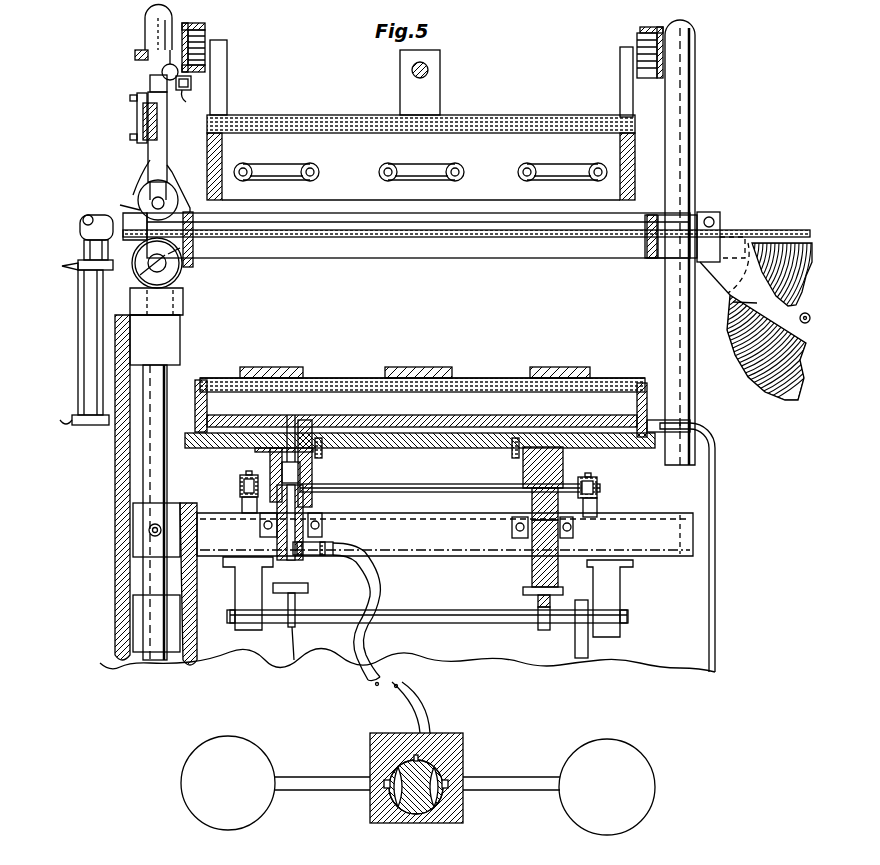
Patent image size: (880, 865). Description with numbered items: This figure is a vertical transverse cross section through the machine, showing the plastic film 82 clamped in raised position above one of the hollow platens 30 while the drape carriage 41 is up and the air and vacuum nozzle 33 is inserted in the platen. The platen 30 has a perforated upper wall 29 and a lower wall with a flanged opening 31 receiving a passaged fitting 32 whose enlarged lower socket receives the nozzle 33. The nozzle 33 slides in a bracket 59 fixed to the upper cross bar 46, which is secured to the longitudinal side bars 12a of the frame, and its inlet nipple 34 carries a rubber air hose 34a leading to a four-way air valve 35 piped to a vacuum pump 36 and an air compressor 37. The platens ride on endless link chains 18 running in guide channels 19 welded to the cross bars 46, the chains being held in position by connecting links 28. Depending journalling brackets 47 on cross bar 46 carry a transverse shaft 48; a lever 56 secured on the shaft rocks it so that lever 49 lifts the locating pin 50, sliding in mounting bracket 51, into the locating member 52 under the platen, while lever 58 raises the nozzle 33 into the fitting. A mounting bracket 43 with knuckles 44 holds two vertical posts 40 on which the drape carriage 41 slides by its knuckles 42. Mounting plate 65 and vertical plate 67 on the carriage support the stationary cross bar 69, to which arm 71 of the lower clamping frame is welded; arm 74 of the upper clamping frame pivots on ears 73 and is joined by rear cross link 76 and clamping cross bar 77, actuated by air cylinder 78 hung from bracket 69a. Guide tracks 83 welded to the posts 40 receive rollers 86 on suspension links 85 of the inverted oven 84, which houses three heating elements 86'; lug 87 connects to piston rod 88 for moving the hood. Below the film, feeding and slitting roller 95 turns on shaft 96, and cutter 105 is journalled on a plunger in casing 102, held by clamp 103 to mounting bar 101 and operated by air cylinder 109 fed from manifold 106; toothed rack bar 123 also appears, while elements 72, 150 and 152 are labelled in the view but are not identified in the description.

The horizontal longitudinal bars 12a is at (700, 542).
The endless link chain 18 is at (244, 486).
The upper metal guide channels 19 is at (242, 478).
The cross bars or connecting links 28 is at (458, 492).
The upper wall of platen 29 is at (628, 380).
The hollow platen 30 is at (652, 398).
The flanged opening 31 is at (300, 410).
The passaged metal fitting 32 is at (270, 460).
The air and vacuum nozzle 33 is at (275, 537).
The inlet nipple 34 is at (310, 555).
The rubber air hose 34a is at (368, 640).
The four-way air valve 35 is at (370, 745).
The vacuum pump 36 is at (181, 778).
The air compressor 37 is at (637, 757).
The vertical posts or shafts 40 is at (685, 150).
The drape carriage 41 is at (118, 498).
The passaged knuckles 42 is at (160, 340).
The metal mounting bracket 43 is at (198, 652).
The upper passaged knuckles 44 is at (230, 588).
The upper transverse cross bar 46 is at (438, 548).
The depending journalling brackets 47 is at (615, 600).
The transverse shaft 48 is at (455, 596).
The metal arm or lever 49 is at (543, 632).
The locating pin 50 is at (532, 570).
The mounting bracket 51 is at (508, 517).
The depending locating member 52 is at (545, 468).
The lever 56 is at (590, 652).
The lever 58 is at (294, 659).
The bracket 59 is at (312, 512).
The flanged mounting plate 65 is at (137, 198).
The vertical mounting plate 67 is at (145, 155).
The stationary horizontal cross bar 69 is at (182, 258).
The apertured angular brackets 69a is at (78, 263).
The parallel arm 71 is at (433, 260).
The spool 72 is at (726, 303).
The apertured ears 73 is at (715, 216).
The metal arm 74 is at (660, 215).
The rear cross link 76 is at (647, 250).
The U-shaped clamping cross bar 77 is at (188, 212).
The air cylinder 78 is at (78, 323).
The plastic film 82 is at (565, 245).
The horizontal guide tracks 83 is at (190, 28).
The inverted hood or oven 84 is at (548, 118).
The suspension links 85 is at (228, 55).
The rollers 86 is at (422, 46).
The electrical heating elements 86' is at (420, 157).
The apertured lug 87 is at (430, 92).
The piston rod 88 is at (428, 70).
The feeding and slitting roller 95 is at (183, 272).
The horizontal shaft 96 is at (150, 270).
The horizontal mounting bar 101 is at (137, 118).
The vertical cylindrical casing 102 is at (165, 128).
The clamp 103 is at (138, 108).
The disklike circular cutter 105 is at (143, 185).
The header pipe or manifold 106 is at (192, 82).
The air cylinder 109 is at (150, 80).
The toothed rack bar 123 is at (138, 52).
The plate 150 is at (512, 378).
The pad 152 is at (420, 366).